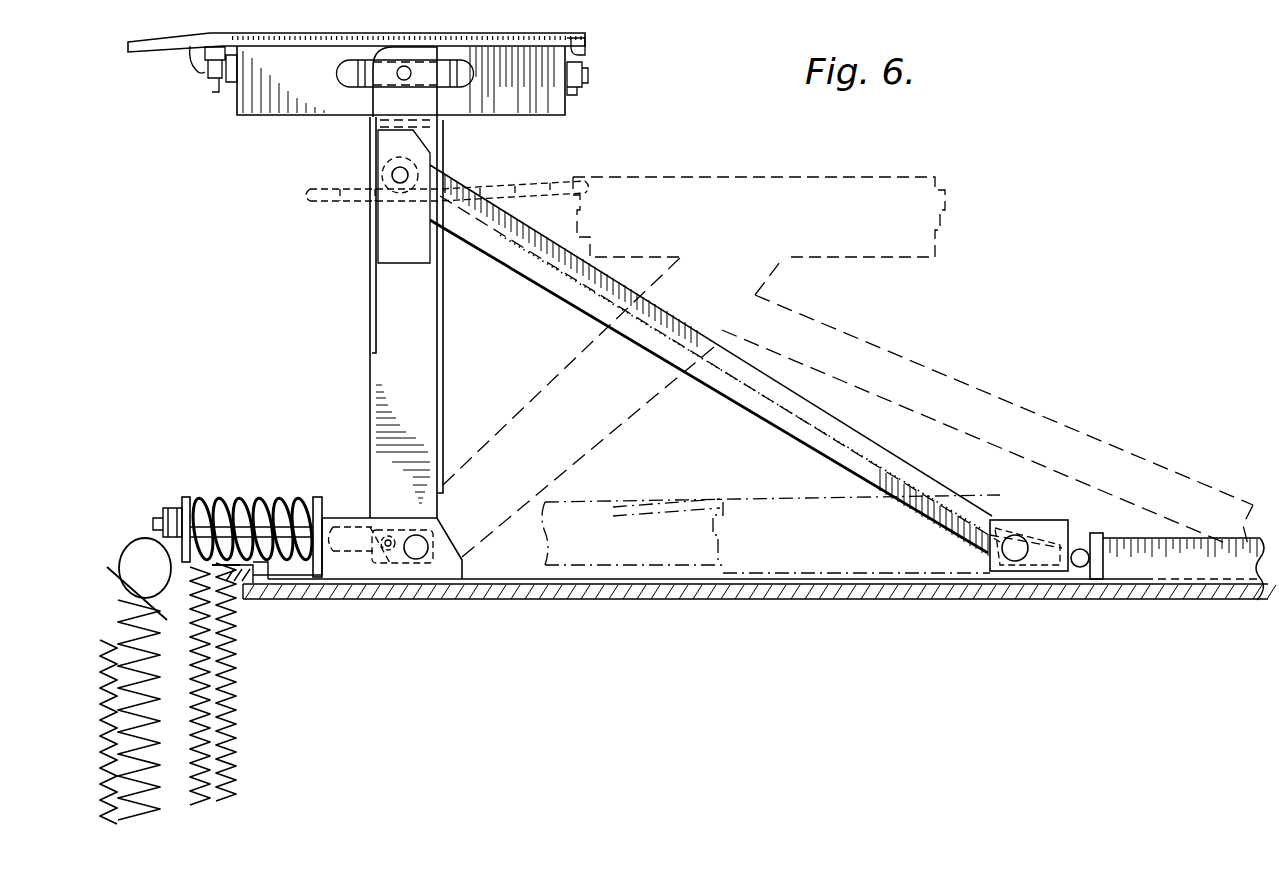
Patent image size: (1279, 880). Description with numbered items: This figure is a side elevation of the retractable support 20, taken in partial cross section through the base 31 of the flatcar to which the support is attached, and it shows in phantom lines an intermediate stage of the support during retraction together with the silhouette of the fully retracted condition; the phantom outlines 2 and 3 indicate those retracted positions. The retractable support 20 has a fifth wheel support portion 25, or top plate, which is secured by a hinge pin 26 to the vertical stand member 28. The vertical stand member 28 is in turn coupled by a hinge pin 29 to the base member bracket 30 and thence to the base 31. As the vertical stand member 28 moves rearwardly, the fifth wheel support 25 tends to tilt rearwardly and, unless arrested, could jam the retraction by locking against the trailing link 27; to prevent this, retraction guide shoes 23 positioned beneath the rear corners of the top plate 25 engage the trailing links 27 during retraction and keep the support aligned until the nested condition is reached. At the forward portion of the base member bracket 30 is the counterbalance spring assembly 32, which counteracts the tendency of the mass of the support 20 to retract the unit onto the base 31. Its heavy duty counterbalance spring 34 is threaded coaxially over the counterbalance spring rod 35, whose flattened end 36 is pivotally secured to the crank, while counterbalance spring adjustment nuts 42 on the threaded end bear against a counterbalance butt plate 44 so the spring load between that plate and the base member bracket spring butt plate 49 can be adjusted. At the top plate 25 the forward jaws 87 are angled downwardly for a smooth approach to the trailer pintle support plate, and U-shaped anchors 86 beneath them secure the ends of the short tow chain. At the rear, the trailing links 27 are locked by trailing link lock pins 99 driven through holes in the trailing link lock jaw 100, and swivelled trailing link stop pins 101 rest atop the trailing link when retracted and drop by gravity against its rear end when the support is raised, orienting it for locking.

The elevator rail (phantom) 2 is at (826, 322).
The floor rail (phantom) 3 is at (790, 516).
The retractable support 20 is at (578, 157).
The retraction guide shoes 23 is at (585, 47).
The fifth wheel support portion 25 is at (588, 33).
The hinge pin 26 is at (404, 80).
The trailing link 27 is at (882, 458).
The vertical stand member 28 is at (380, 360).
The hinge pin 29 is at (428, 560).
The base member bracket 30 is at (366, 560).
The base 31 is at (766, 592).
The counterbalance spring assembly 32 is at (254, 492).
The counterbalance spring 34 is at (230, 500).
The counterbalance spring rod 35 is at (285, 500).
The flattened end 36 is at (350, 530).
The counterbalance spring adjustment nuts 42 is at (175, 505).
The counterbalance butt plate 44 is at (192, 500).
The base member bracket spring butt plate 49 is at (320, 565).
The U-shaped anchors 86 is at (215, 60).
The forward jaws 87 is at (152, 52).
The trailing link lock pins 99 is at (1020, 546).
The trailing link lock jaw 100 is at (1070, 545).
The trailing link stop pins 101 is at (1082, 625).